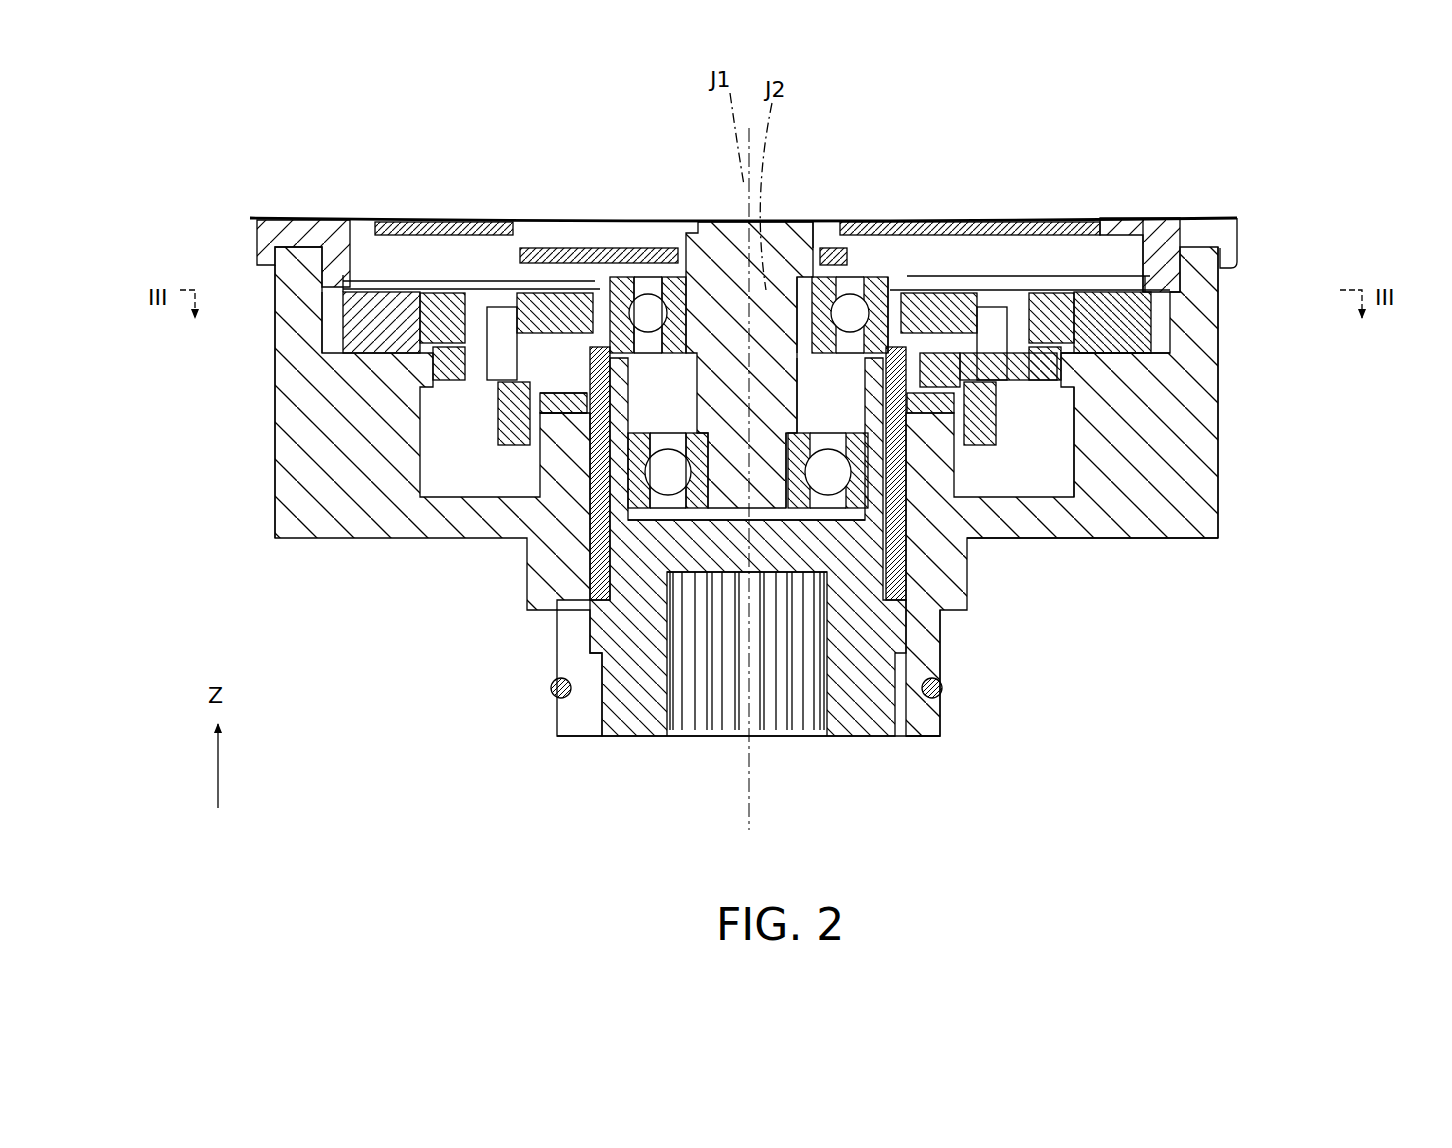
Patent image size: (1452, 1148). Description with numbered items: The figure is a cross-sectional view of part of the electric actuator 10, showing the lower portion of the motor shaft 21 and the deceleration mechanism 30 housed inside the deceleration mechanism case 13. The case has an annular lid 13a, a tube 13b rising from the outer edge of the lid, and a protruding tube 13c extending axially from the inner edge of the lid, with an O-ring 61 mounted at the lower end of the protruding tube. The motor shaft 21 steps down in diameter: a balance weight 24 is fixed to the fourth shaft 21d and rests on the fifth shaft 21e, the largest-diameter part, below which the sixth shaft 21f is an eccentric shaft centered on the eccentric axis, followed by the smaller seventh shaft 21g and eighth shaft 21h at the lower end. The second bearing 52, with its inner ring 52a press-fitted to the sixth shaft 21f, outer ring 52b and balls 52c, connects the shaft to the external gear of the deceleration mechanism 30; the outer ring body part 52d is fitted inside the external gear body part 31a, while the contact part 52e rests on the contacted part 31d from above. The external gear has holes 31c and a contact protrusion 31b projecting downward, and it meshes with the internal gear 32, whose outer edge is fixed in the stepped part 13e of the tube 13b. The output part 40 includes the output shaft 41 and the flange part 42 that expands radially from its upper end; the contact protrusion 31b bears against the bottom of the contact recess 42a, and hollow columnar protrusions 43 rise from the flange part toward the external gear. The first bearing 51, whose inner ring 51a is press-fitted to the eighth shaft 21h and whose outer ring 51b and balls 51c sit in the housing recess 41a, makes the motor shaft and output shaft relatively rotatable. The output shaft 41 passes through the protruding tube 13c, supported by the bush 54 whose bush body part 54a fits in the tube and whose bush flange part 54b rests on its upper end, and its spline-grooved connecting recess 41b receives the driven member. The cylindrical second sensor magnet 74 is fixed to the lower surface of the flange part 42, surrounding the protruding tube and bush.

The electric actuator 10 is at (1308, 170).
The deceleration mechanism case 13 is at (1232, 309).
The lid 13a is at (1028, 537).
The tube 13b is at (1215, 432).
The protruding tube 13c is at (921, 722).
The stepped part 13e is at (1070, 333).
The motor shaft 21 is at (824, 485).
The fourth shaft 21d is at (814, 235).
The fifth shaft 21e is at (845, 258).
The sixth shaft 21f is at (784, 292).
The seventh shaft 21g is at (782, 397).
The eighth shaft 21h is at (774, 492).
The balance weight 24 is at (538, 250).
The deceleration mechanism 30 is at (332, 328).
The external gear body part 31a is at (1200, 545).
The contact protrusion 31b is at (1158, 548).
The holes 31c is at (475, 292).
The contacted part 31d is at (608, 290).
The internal gear 32 is at (357, 350).
The output part 40 is at (855, 742).
The output shaft 41 is at (646, 722).
The housing recess 41a is at (452, 365).
The connecting recess 41b is at (668, 692).
The flange part 42 is at (480, 322).
The contact recess 42a is at (524, 302).
The protrusions 43 is at (362, 332).
The first bearing 51 is at (598, 475).
The inner ring 51a is at (697, 495).
The outer ring 51b is at (642, 495).
The balls 51c is at (905, 557).
The second bearing 52 is at (880, 262).
The inner ring 52a is at (678, 294).
The outer ring 52b is at (1050, 119).
The balls 52c is at (648, 298).
The outer ring body part 52d is at (985, 335).
The contact part 52e is at (925, 340).
The bush 54 is at (516, 692).
The bush body part 54a is at (580, 440).
The bush flange part 54b is at (548, 402).
The O-ring 61 is at (938, 692).
The second sensor magnet 74 is at (1138, 292).